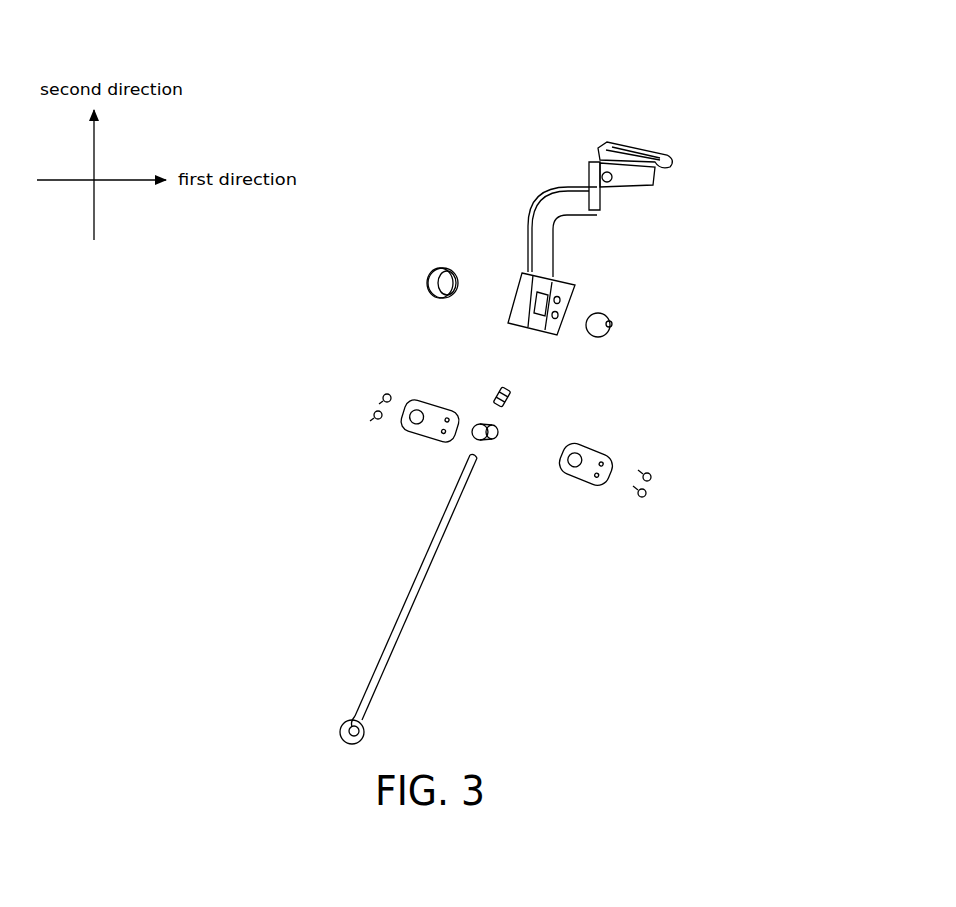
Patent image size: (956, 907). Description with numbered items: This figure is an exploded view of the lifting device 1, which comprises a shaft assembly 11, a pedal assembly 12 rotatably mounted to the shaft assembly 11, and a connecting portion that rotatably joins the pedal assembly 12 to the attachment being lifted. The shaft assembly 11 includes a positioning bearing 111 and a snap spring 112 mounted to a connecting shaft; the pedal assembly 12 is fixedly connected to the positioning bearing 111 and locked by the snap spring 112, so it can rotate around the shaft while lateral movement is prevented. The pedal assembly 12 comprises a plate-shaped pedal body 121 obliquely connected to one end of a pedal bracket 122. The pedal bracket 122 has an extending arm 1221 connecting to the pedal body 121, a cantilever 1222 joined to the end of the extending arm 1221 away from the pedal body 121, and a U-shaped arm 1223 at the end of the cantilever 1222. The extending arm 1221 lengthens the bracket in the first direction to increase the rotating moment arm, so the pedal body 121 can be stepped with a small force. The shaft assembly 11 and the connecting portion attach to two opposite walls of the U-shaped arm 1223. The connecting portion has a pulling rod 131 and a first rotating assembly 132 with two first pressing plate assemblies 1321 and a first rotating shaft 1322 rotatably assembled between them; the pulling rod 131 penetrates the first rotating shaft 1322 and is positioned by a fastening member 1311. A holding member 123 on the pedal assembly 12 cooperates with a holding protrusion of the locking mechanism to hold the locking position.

The lifting device 1 is at (245, 40).
The shaft assembly 11 is at (632, 311).
The positioning bearing 111 is at (432, 272).
The snap spring 112 is at (601, 337).
The pedal assembly 12 is at (522, 194).
The pedal body 121 is at (632, 148).
The pedal bracket 122 is at (777, 117).
The extending arm 1221 is at (632, 172).
The cantilever 1222 is at (596, 187).
The U-shaped arm 1223 is at (572, 283).
The holding member 123 is at (596, 162).
The pulling rod 131 is at (402, 603).
The fastening member 1311 is at (495, 388).
The first rotating assembly 132 is at (397, 446).
The first pressing plate assembly 1321 is at (595, 482).
The first rotating shaft 1322 is at (489, 444).